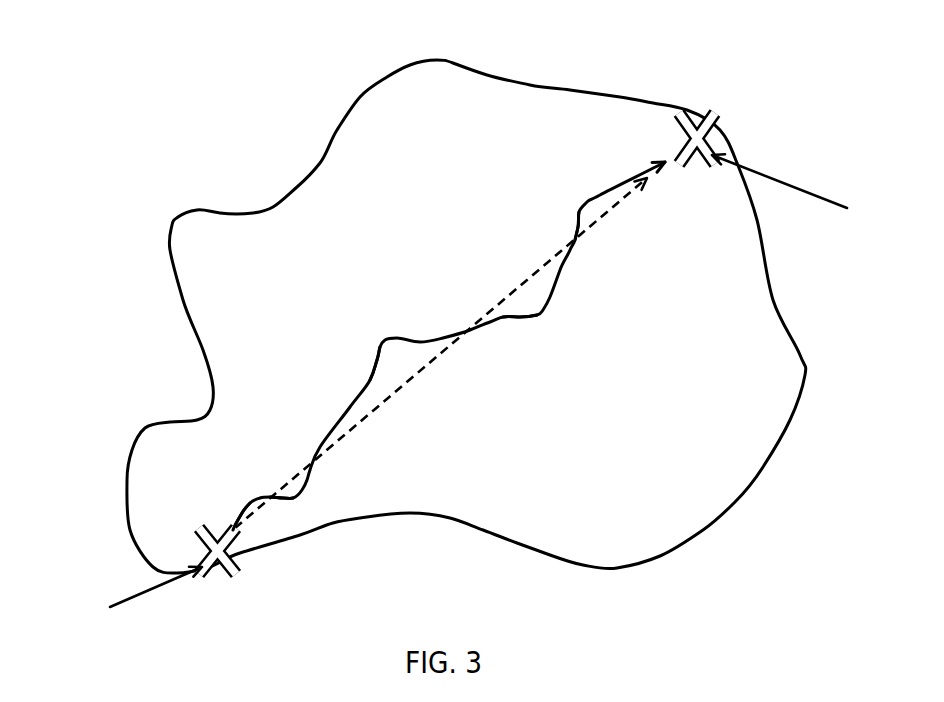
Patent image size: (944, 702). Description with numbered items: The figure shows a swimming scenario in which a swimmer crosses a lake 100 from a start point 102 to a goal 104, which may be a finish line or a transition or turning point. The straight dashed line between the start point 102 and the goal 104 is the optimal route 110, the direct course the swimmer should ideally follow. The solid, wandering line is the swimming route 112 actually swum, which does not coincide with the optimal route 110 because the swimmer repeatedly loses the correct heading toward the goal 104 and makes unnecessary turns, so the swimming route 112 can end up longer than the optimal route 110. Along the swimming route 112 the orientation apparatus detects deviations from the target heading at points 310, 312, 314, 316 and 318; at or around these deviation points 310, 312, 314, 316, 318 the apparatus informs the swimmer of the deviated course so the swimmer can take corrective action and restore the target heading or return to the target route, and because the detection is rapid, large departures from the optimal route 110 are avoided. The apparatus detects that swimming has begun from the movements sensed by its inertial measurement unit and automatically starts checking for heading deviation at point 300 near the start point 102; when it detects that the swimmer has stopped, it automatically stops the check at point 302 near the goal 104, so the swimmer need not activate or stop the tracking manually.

The lake 100 is at (536, 82).
The start point 102 is at (233, 580).
The goal 104 is at (712, 123).
The optimal route 110 is at (397, 390).
The swimming route 112 is at (617, 190).
The start point for heading check 300 is at (128, 600).
The stop point for heading check 302 is at (797, 195).
The deviation point 310 is at (237, 501).
The deviation point 312 is at (290, 511).
The deviation point 314 is at (364, 365).
The deviation point 316 is at (532, 330).
The deviation point 318 is at (566, 231).